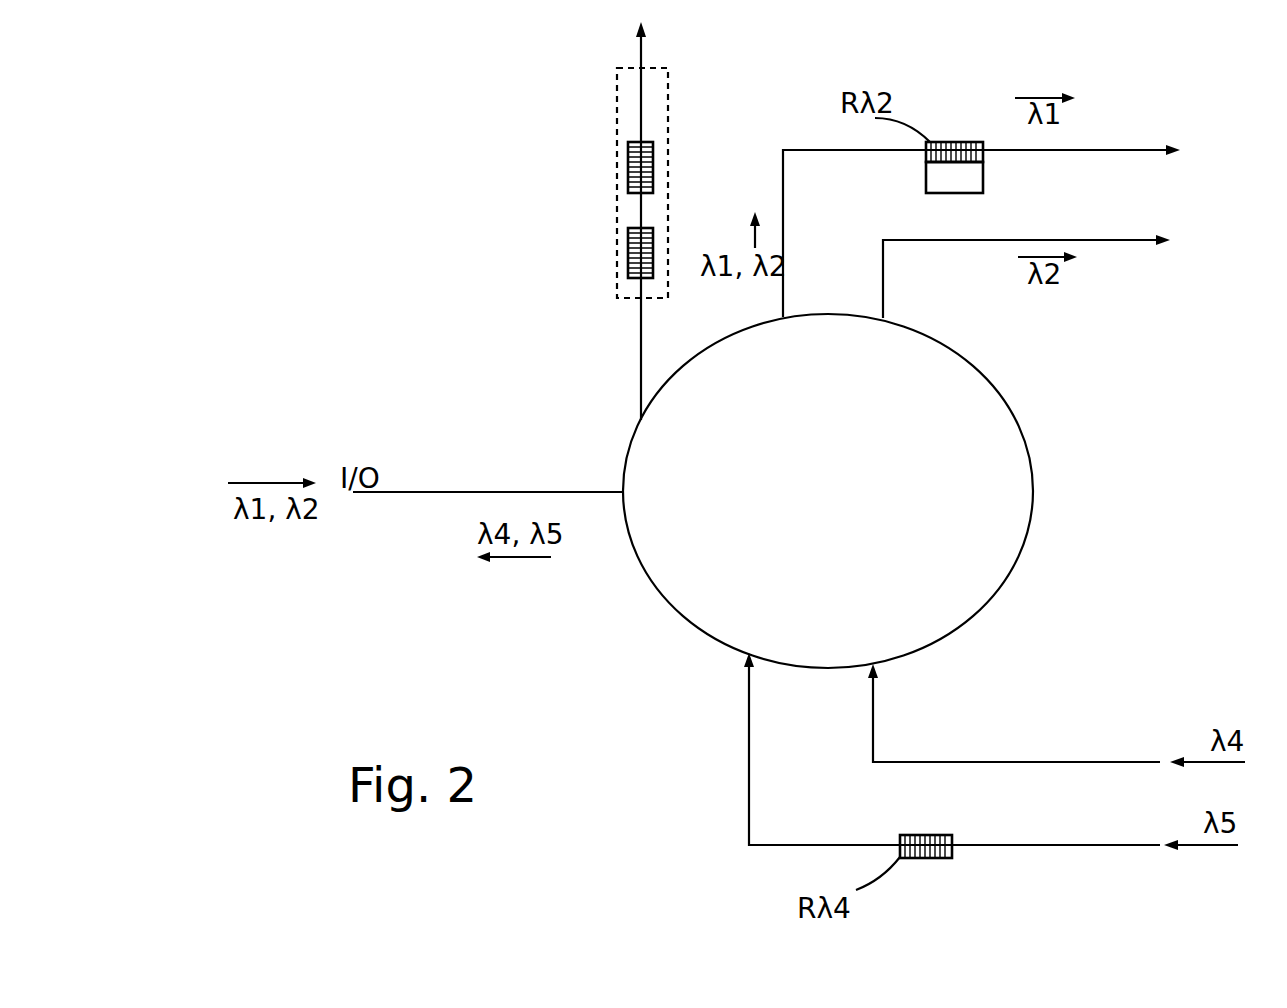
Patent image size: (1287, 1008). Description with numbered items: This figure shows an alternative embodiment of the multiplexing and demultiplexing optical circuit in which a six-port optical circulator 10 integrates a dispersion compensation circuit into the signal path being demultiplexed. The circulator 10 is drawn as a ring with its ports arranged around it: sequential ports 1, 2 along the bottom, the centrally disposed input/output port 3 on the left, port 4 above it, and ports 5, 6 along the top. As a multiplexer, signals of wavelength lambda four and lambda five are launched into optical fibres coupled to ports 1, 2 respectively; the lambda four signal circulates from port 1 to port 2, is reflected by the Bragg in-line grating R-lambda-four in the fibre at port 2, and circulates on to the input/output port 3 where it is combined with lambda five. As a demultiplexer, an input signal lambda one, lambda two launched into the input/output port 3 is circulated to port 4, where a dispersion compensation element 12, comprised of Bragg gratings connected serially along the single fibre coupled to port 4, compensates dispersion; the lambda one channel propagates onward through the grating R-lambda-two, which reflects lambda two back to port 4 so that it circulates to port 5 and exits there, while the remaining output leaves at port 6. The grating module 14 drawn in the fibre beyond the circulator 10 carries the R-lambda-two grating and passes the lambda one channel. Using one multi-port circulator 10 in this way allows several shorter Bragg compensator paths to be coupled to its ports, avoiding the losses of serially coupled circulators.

The optical circulator 10 is at (1010, 407).
The dispersion compensation element 12 is at (617, 190).
The fiber grating module 14 is at (983, 180).
The port 1 is at (1014, 712).
The port 2 is at (952, 749).
The I/O port 3 is at (488, 509).
The port 4 is at (626, 366).
The port 5 is at (972, 232).
The port 6 is at (1015, 276).